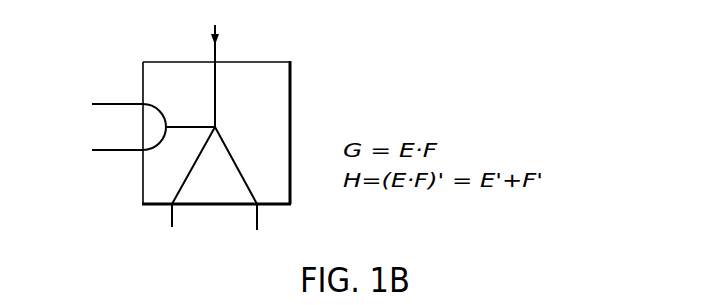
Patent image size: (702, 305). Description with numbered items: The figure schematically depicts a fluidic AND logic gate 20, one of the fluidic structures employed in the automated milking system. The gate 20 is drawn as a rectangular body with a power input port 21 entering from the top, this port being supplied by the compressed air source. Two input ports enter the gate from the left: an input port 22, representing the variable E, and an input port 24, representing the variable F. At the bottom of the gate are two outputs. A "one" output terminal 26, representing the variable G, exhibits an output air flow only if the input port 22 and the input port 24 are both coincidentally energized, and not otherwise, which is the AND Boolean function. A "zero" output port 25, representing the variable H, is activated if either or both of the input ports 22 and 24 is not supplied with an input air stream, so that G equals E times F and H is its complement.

The AND logic gate 20 is at (290, 110).
The power input port 21 is at (218, 56).
The input port 22 is at (127, 104).
The input port 24 is at (128, 150).
The "0" output port 25 is at (172, 227).
The "1" output terminal 26 is at (257, 230).